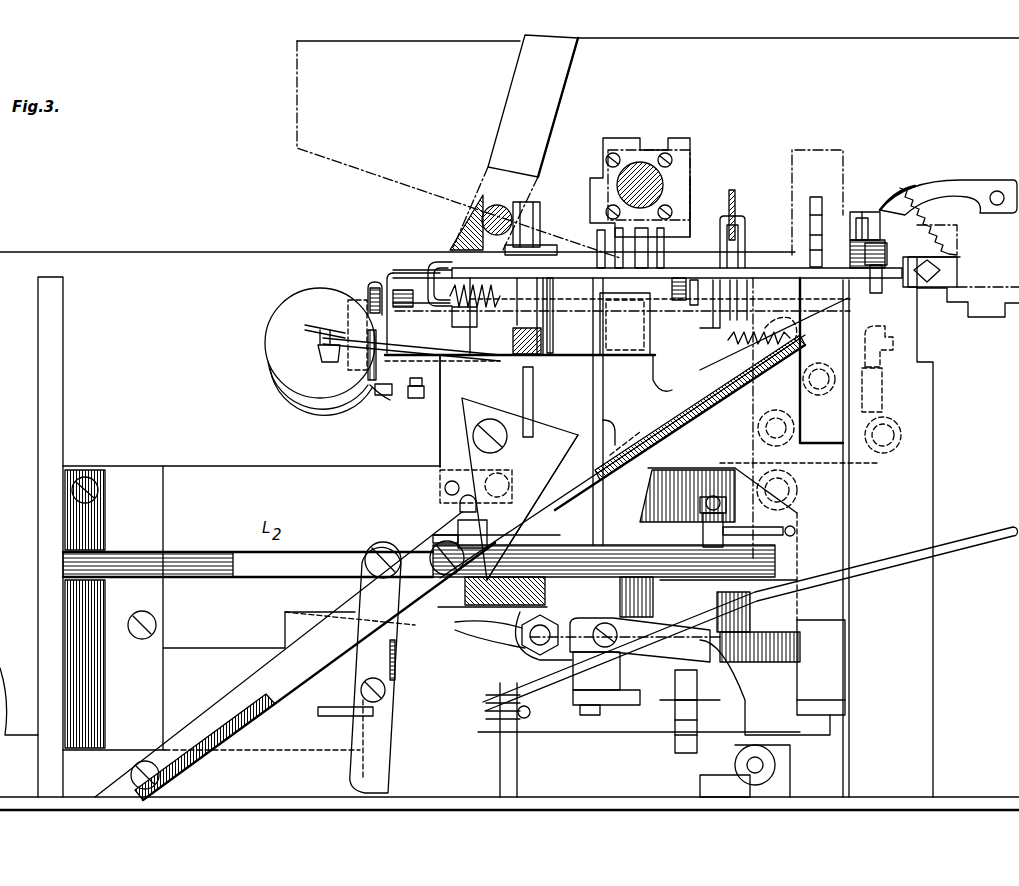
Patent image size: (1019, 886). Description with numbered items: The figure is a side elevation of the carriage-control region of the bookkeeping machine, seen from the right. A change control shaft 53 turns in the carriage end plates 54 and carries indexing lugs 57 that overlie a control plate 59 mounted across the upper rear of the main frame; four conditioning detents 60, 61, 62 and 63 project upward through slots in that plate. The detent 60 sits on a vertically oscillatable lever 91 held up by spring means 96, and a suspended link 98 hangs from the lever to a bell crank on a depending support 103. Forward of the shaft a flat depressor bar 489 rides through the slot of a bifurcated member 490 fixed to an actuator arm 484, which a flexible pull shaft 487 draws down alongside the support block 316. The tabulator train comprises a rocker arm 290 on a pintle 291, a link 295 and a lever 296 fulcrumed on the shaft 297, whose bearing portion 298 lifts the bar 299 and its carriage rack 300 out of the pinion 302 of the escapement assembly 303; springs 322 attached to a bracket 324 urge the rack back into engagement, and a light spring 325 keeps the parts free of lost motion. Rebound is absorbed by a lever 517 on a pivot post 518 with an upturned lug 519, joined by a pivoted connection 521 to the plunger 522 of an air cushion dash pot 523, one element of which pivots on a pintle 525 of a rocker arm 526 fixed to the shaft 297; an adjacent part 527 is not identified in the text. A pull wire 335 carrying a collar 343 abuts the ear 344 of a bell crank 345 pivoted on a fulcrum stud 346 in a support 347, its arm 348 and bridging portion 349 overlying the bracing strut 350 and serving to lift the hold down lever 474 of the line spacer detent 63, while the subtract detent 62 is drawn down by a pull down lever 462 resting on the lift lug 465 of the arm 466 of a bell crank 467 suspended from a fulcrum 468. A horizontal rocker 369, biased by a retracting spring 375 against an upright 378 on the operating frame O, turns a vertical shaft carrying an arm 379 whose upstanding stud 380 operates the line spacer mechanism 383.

The carriage end plates 54 is at (345, 150).
The line spacer mechanism 383 is at (493, 205).
The upstanding stud 380 is at (538, 218).
The radially extending arm 379 is at (470, 240).
The change control shaft 53 is at (633, 170).
The indexing members 57 is at (682, 200).
The subtract detent 62 is at (608, 223).
The tabulator stop pawl 61 is at (645, 250).
The line spacer detent 63 is at (612, 245).
The detent 60 is at (670, 244).
The depressor bar 489 is at (740, 208).
The bifurcated member 490 is at (748, 238).
The control plate 59 is at (766, 268).
The escapement assembly 303 is at (816, 198).
The escapement pinion 302 is at (855, 240).
The carriage rack 300 is at (866, 215).
The bar 299 is at (882, 200).
The bracket 324 is at (965, 180).
The springs 322 is at (925, 215).
The flat bearing portion 298 is at (885, 248).
The vertically oscillatable lever 91 is at (678, 280).
The spring means 96 is at (700, 282).
The spring post 527 is at (368, 285).
The shaft 297 is at (403, 290).
The lever 517 is at (442, 355).
The pivot post 518 is at (520, 325).
The upturned lug 519 is at (625, 324).
The support block 316 is at (712, 325).
The flexible pull shaft 487 is at (765, 318).
The actuator arm 484 is at (802, 338).
The light spring 325 is at (740, 345).
The suspended link 98 is at (672, 368).
The laterally extended lever 296 is at (895, 350).
The link 295 is at (880, 400).
The fulcrum 468 is at (818, 397).
The pintle 291 is at (760, 434).
The bell crank 467 is at (750, 464).
The air cushion dash pot 523 is at (290, 405).
The plunger 522 is at (300, 357).
The pivoted connection 521 is at (322, 360).
The pintle 525 is at (395, 405).
The rocker arm 526 is at (375, 410).
The retracting spring 375 is at (438, 388).
The upright 378 is at (405, 450).
The horizontal rocker 369 is at (440, 445).
The support 347 is at (522, 390).
The fulcrum stud 346 is at (510, 440).
The hold down lever 474 is at (592, 402).
The bridging portion 349 is at (592, 418).
The lift lug 465 is at (625, 440).
The pull down lever 462 is at (630, 455).
The forwardly extended arm 348 is at (515, 490).
The ear 344 is at (520, 520).
The bell crank 345 is at (445, 487).
The collar 343 is at (458, 530).
The rocker arm 290 is at (612, 545).
The rearwardly extending arm 466 is at (718, 495).
The pull wire 335 is at (785, 528).
The depending support 103 is at (740, 586).
The bracing strut 350 is at (252, 680).
The operating frame O is at (178, 470).